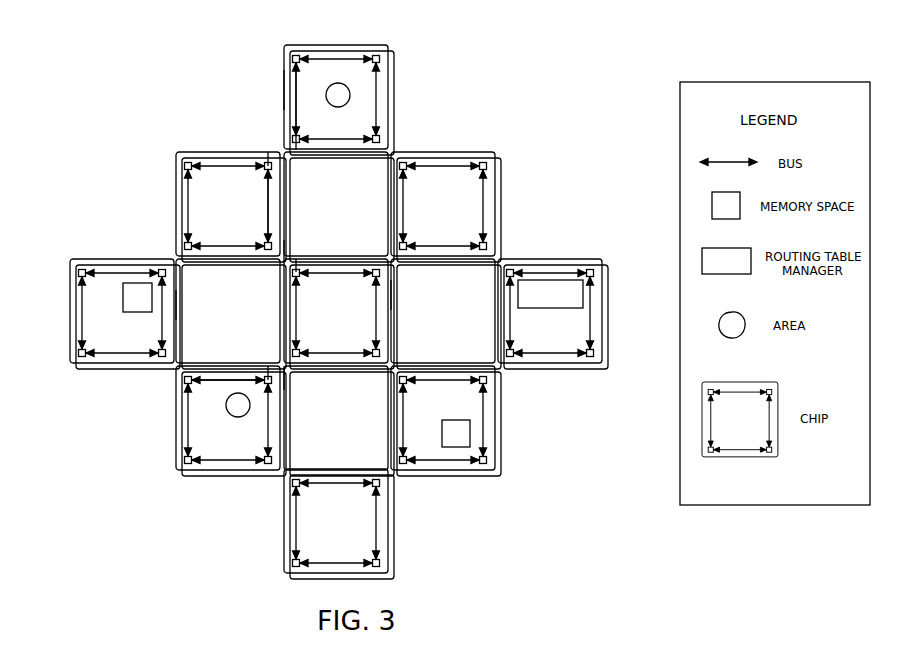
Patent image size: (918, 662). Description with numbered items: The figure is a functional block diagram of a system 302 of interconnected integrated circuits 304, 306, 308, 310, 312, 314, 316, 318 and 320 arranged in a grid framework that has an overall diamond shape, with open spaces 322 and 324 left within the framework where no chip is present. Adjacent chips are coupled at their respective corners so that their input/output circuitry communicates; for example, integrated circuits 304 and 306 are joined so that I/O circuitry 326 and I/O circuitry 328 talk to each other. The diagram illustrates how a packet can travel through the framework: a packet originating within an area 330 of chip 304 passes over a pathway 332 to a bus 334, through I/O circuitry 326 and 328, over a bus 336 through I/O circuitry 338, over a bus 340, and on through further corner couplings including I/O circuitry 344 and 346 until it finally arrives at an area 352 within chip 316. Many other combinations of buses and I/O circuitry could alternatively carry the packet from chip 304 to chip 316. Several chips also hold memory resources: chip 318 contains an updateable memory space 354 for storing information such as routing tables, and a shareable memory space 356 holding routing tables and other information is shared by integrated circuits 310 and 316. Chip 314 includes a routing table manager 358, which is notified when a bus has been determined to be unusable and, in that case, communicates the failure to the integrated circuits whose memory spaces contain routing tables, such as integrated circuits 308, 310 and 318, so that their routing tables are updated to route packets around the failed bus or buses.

The system 302 is at (90, 147).
The integrated circuit 304 is at (395, 72).
The integrated circuit 306 is at (288, 178).
The integrated circuit 308 is at (500, 160).
The integrated circuit 310 is at (185, 303).
The integrated circuit 312 is at (397, 290).
The integrated circuit 314 is at (586, 298).
The integrated circuit 316 is at (204, 421).
The integrated circuit 318 is at (479, 421).
The integrated circuit 320 is at (395, 505).
The space 322 is at (274, 311).
The space 324 is at (454, 343).
The I/O circuitry 326 is at (278, 140).
The I/O circuitry 328 is at (272, 150).
The area 330 is at (343, 106).
The pathway 332 is at (299, 84).
The bus 334 is at (283, 88).
The bus 336 is at (266, 198).
The I/O circuitry 338 is at (288, 250).
The bus 340 is at (296, 266).
The I/O circuitry 344 is at (284, 374).
The I/O circuitry 346 is at (283, 378).
The area 352 is at (232, 418).
The memory space 354 is at (462, 420).
The shareable memory space 356 is at (130, 312).
The routing table manager 358 is at (542, 280).